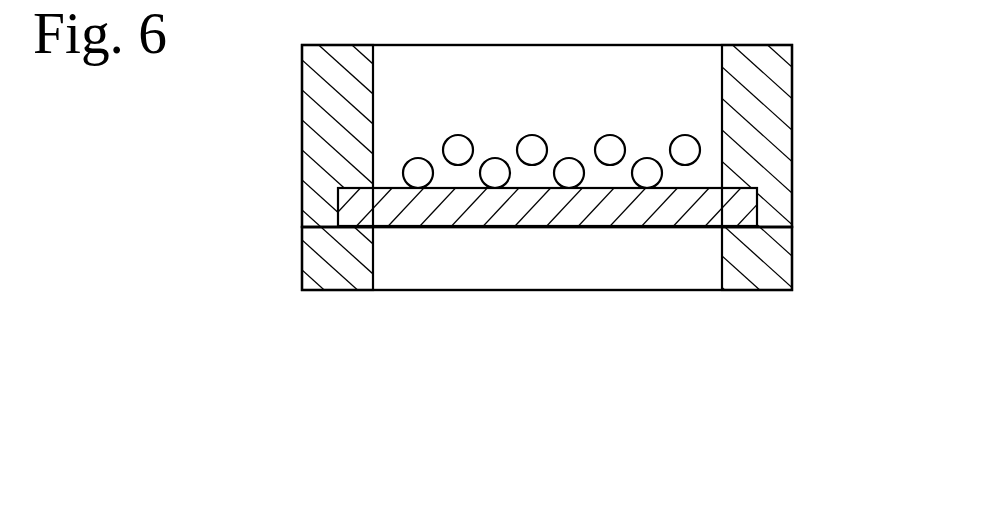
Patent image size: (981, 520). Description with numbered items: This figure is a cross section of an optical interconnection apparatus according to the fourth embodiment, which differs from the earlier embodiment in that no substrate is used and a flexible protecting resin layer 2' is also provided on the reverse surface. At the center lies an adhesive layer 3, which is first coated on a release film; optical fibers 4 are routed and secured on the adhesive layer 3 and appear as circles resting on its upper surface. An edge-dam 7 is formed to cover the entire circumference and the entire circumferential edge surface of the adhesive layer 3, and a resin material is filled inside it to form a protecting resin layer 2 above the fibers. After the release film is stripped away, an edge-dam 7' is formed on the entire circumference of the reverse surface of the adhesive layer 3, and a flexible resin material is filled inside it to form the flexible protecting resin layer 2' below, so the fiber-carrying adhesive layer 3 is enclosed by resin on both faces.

The protecting resin layer 2 is at (547, 115).
The flexible protecting resin layer 2' is at (547, 287).
The adhesive layer 3 is at (537, 215).
The optical fibers 4 is at (459, 145).
The edge-dam 7 is at (574, 175).
The edge-dam 7' is at (580, 259).